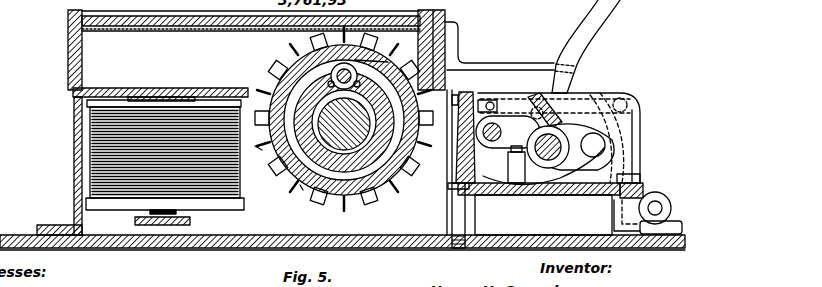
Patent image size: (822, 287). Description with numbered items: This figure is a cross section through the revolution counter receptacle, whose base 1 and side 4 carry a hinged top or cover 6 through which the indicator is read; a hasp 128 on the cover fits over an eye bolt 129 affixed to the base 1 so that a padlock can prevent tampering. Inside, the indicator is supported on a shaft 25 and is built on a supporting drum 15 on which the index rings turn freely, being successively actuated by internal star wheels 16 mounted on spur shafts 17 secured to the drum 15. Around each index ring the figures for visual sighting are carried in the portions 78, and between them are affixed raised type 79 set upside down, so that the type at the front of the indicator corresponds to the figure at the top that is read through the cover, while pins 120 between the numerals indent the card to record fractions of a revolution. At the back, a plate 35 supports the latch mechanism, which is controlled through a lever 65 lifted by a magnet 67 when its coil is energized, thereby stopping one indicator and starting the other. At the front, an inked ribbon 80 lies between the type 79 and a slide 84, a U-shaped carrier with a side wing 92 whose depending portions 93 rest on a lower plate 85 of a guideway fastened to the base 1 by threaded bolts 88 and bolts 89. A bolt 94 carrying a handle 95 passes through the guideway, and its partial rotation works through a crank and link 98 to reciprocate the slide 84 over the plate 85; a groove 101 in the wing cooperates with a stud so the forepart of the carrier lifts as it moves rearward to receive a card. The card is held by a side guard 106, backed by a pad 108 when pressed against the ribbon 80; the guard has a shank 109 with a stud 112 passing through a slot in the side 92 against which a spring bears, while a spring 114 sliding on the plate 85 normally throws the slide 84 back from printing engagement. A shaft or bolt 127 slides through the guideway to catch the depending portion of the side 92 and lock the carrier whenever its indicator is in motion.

The base 1 is at (246, 252).
The side 4 is at (74, 137).
The hinged top or cover 6 is at (68, 41).
The supporting drum 15 is at (303, 190).
The internal star wheels 16 is at (303, 60).
The spur shafts 17 is at (388, 62).
The shaft 25 is at (356, 128).
The plate 35 is at (116, 96).
The lever 65 is at (190, 222).
The magnet 67 is at (182, 118).
The portions 78 is at (326, 200).
The raised type 79 is at (377, 41).
The inked ribbon 80 is at (456, 46).
The slide 84 is at (482, 92).
The lower plate 85 is at (557, 196).
The threaded bolts 88 is at (462, 220).
The bolts 89 is at (643, 177).
The side wing 92 is at (588, 92).
The depending portions 93 is at (645, 128).
The bolt 94 is at (605, 150).
The handle 95 is at (620, 4).
The link 98 is at (531, 132).
The groove 101 is at (643, 104).
The side guard 106 is at (462, 92).
The pad 108 is at (442, 160).
The shank 109 is at (579, 90).
The stud 112 is at (494, 100).
The spring 114 is at (540, 196).
The pins 120 is at (289, 172).
The shaft or bolt 127 is at (636, 141).
The hasp 128 is at (682, 227).
The eye bolt 129 is at (668, 203).